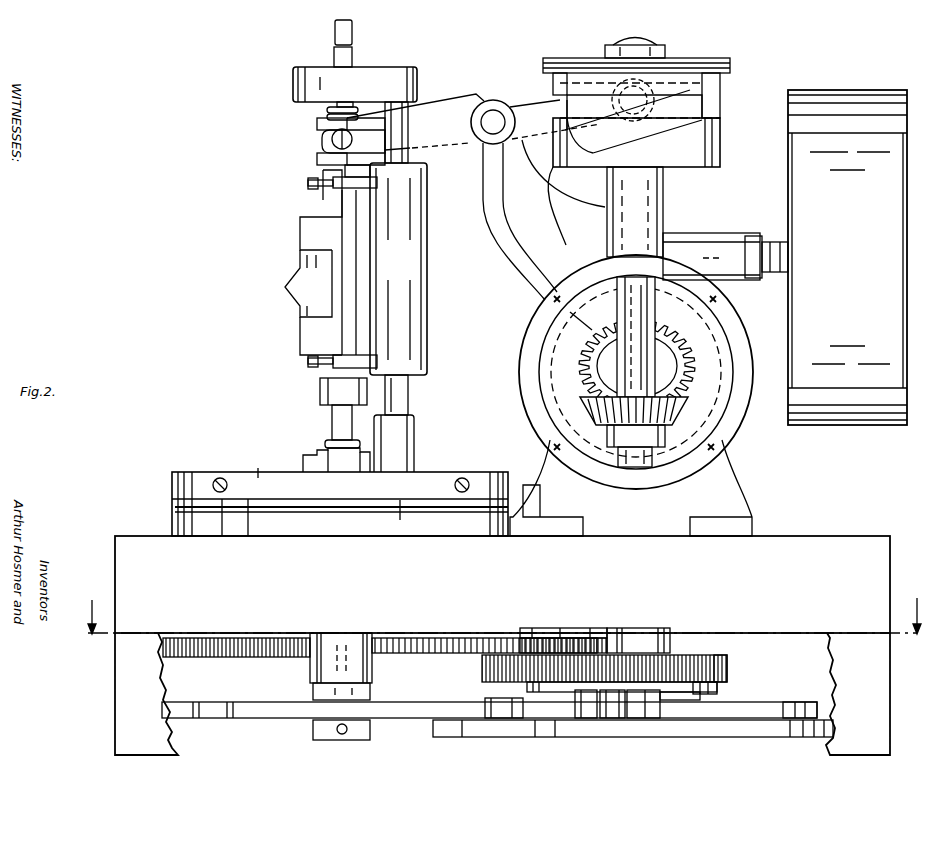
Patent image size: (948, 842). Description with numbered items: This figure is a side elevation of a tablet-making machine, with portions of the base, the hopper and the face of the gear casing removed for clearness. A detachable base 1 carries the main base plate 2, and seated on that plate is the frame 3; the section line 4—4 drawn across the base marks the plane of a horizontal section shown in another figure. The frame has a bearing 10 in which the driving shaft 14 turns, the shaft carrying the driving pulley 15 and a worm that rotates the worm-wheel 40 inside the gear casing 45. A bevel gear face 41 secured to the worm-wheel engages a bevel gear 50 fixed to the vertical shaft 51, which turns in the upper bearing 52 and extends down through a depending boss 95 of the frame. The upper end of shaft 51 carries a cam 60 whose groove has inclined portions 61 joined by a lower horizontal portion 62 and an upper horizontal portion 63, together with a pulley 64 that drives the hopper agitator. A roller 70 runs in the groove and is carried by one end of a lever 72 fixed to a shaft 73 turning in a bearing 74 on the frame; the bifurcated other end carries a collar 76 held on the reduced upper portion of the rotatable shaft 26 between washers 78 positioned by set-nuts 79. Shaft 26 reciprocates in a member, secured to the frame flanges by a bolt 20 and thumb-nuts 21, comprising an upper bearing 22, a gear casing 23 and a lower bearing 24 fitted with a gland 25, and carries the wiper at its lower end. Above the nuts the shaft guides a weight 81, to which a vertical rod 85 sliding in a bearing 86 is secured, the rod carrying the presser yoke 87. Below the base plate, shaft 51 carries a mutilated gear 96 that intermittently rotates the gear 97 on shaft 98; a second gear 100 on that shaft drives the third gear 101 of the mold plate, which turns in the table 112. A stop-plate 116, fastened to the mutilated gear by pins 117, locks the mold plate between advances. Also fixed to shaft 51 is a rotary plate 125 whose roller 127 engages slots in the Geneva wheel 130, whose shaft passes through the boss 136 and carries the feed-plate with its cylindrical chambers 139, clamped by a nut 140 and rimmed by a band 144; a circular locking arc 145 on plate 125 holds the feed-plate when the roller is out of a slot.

The detachable base 1 is at (128, 682).
The main base plate 2 is at (128, 578).
The frame 3 is at (746, 490).
The section line 4— 4 is at (503, 616).
The bearing 10 is at (712, 256).
The driving shaft 14 is at (790, 254).
The driving pulley 15 is at (847, 257).
The bolt 20 is at (350, 184).
The thumb-nuts 21 is at (308, 183).
The upper bearing 22 is at (320, 208).
The gear casing 23 is at (296, 290).
The lower bearing 24 is at (320, 332).
The gland 25 is at (320, 392).
The rotatable shaft 26 is at (351, 58).
The worm-wheel 40 is at (583, 320).
The bevel gear face 41 is at (665, 368).
The gear casing 45 is at (740, 372).
The bevel gear 50 is at (676, 412).
The vertical shaft 51 is at (641, 312).
The upper bearing 52 is at (655, 201).
The cam 60 is at (720, 144).
The inclined portions 61 is at (570, 137).
The lower horizontal portion 62 is at (598, 113).
The upper horizontal portion 63 is at (720, 88).
The pulley 64 is at (575, 58).
The roller 70 is at (664, 62).
The lever 72 is at (473, 122).
The shaft 73 is at (493, 122).
The bearing 74 is at (493, 100).
The collar 76 is at (322, 141).
The washers 78 is at (317, 124).
The set-nuts 79 is at (327, 109).
The weight 81 is at (355, 87).
The vertical rod 85 is at (408, 400).
The bearing 86 is at (398, 238).
The presser yoke 87 is at (394, 443).
The downwardly depending boss 95 is at (645, 642).
The mutilated gear 96 is at (727, 667).
The gear 97 is at (482, 670).
The shaft 98 is at (550, 630).
The second gear 100 is at (575, 642).
The third gear 101 is at (236, 657).
The table 112 is at (340, 504).
The stop-plate 116 is at (717, 689).
The pins 117 is at (695, 696).
The rotary plate 125 is at (722, 728).
The roller 127 is at (503, 708).
The Geneva wheel 130 is at (292, 712).
The boss 136 is at (330, 666).
The cylindrical chambers 139 is at (407, 518).
The nut 140 is at (336, 460).
The band or rim 144 is at (250, 467).
The circular locking arc 145 is at (797, 704).